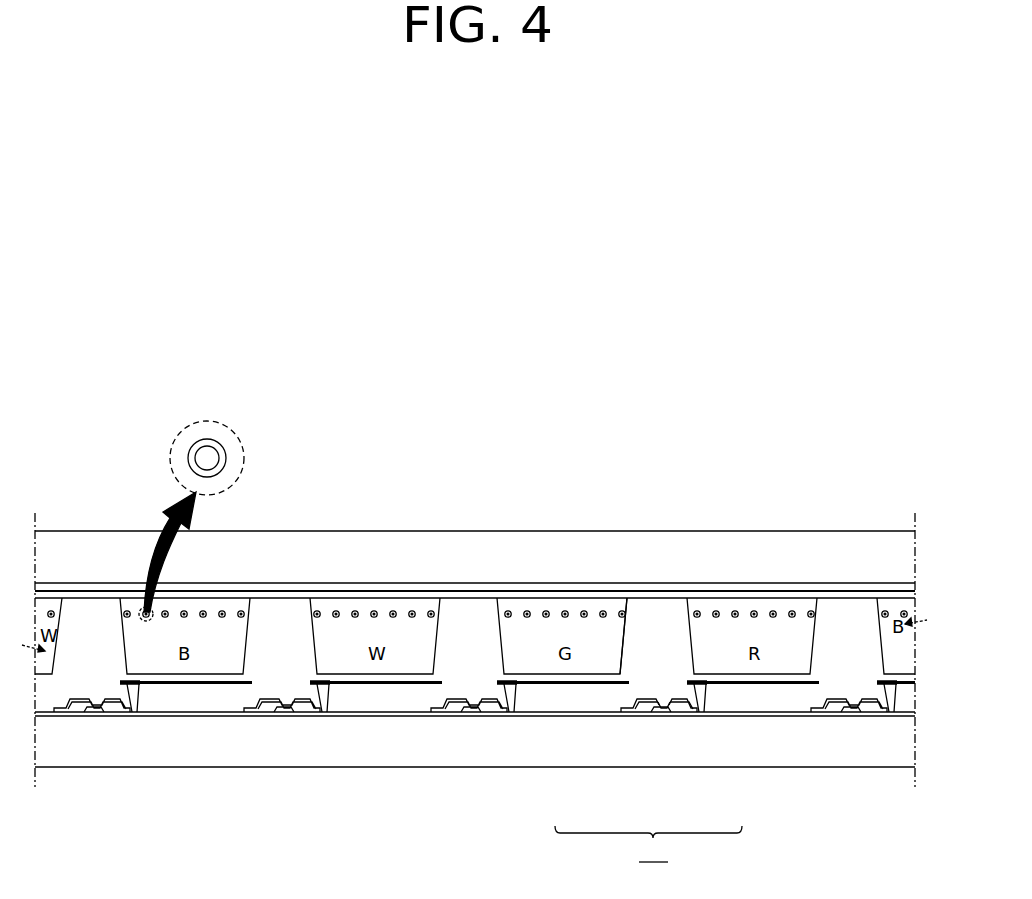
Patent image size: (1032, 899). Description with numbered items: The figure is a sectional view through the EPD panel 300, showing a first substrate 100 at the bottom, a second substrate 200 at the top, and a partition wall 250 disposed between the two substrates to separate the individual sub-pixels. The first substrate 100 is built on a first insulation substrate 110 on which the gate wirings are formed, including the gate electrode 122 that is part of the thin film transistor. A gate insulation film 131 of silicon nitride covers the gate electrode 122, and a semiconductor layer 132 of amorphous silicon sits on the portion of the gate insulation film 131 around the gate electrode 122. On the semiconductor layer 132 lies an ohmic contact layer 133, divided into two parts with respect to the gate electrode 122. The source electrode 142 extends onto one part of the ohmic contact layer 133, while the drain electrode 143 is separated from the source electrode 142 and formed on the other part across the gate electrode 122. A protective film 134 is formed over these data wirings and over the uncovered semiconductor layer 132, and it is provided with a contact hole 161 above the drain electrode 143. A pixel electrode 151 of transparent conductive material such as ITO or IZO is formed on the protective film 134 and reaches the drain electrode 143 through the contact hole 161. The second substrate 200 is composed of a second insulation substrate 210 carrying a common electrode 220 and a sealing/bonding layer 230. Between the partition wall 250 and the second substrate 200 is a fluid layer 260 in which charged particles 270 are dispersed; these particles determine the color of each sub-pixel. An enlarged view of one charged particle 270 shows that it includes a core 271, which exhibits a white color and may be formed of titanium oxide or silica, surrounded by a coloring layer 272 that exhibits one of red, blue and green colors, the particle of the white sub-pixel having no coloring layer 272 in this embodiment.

The first substrate 100 is at (475, 791).
The first insulation substrate 110 is at (450, 758).
The gate electrode 122 is at (665, 766).
The gate insulation film 131 is at (641, 763).
The semiconductor layer 132 is at (617, 763).
The ohmic contact layer 133 is at (694, 763).
The protective film 134 is at (783, 700).
The source electrode 142 is at (598, 762).
The drain electrode 143 is at (713, 762).
The pixel electrode 151 is at (548, 684).
The contact hole 161 is at (140, 714).
The second substrate 200 is at (475, 521).
The second insulation substrate 210 is at (478, 557).
The common electrode 220 is at (408, 585).
The sealing/bonding layer 230 is at (482, 478).
The partition wall 250 is at (658, 615).
The fluid layer 260 is at (748, 598).
The charged particle 270 is at (808, 607).
The core 271 is at (197, 440).
The coloring layer 272 is at (215, 440).
The EPD panel 300 is at (173, 476).